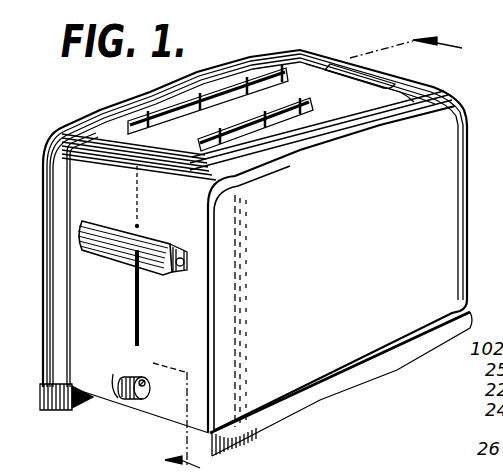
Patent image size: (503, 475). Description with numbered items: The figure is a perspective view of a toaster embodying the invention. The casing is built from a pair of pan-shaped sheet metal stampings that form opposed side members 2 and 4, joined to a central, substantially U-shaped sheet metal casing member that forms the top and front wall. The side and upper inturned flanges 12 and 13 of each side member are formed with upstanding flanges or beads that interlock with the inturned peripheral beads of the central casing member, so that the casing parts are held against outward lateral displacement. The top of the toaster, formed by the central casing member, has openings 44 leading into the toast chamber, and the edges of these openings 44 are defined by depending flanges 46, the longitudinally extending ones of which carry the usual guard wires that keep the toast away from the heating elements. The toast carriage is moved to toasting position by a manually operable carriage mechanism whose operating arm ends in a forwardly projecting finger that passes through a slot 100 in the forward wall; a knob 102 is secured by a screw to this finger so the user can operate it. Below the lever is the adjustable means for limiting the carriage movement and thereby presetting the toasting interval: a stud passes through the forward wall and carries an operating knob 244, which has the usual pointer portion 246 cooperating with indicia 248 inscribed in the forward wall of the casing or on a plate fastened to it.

The side member 2 is at (312, 255).
The side member 4 is at (197, 72).
The side inturned flange 12 is at (227, 342).
The upper inturned flange 13 is at (302, 142).
The opening 44 is at (360, 72).
The depending flange 46 is at (300, 57).
The slot 100 is at (142, 312).
The knob 102 is at (157, 242).
The operating knob 244 is at (130, 398).
The pointer portion 246 is at (113, 374).
The indicia 248 is at (143, 364).